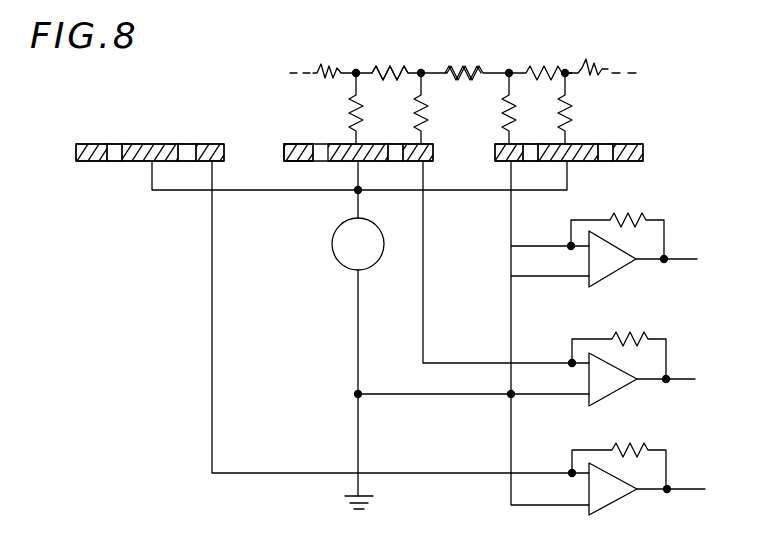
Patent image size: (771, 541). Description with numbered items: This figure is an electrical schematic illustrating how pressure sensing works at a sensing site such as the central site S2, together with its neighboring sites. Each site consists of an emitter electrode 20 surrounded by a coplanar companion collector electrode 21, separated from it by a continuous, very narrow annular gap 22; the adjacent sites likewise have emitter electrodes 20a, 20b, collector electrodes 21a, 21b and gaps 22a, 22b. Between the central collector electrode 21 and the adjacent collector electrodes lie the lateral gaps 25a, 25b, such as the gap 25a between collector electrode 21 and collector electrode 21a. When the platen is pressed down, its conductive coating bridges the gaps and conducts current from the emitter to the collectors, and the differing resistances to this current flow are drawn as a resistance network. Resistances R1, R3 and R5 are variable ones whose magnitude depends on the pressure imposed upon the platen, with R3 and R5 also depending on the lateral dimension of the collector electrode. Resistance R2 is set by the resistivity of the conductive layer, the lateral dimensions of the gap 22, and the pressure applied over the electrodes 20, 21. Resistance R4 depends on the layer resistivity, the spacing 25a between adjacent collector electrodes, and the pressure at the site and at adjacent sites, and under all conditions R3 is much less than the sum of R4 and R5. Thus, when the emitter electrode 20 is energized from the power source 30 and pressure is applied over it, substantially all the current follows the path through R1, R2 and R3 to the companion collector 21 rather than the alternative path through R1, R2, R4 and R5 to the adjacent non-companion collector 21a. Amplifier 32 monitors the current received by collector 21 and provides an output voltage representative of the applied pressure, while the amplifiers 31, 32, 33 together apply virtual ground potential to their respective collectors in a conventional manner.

The central sensing site S2 is at (356, 48).
The variable resistance R1 is at (349, 109).
The resistance R2 is at (390, 58).
The variable resistance R3 is at (416, 108).
The resistance R4 is at (463, 56).
The variable resistance R5 is at (503, 108).
The emitter electrode 20 is at (343, 163).
The emitter electrode 20a is at (582, 162).
The emitter electrode 20b is at (152, 165).
The collector electrode 21 is at (298, 143).
The collector electrode 21a is at (643, 152).
The collector electrode 21b is at (207, 147).
The annular gap 22 is at (398, 163).
The annular gap 22a is at (607, 143).
The annular gap 22b is at (113, 147).
The gap between collector electrodes 25a is at (466, 152).
The gap between collector electrodes 25b is at (252, 155).
The power source 30 is at (358, 335).
The amplifier 31 is at (622, 268).
The amplifier 32 is at (622, 388).
The amplifier 33 is at (620, 498).